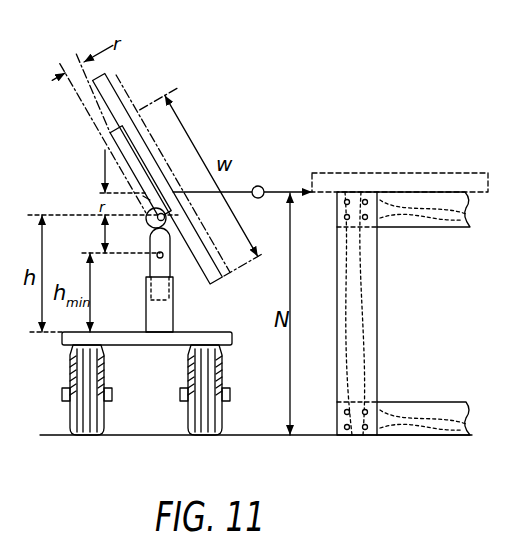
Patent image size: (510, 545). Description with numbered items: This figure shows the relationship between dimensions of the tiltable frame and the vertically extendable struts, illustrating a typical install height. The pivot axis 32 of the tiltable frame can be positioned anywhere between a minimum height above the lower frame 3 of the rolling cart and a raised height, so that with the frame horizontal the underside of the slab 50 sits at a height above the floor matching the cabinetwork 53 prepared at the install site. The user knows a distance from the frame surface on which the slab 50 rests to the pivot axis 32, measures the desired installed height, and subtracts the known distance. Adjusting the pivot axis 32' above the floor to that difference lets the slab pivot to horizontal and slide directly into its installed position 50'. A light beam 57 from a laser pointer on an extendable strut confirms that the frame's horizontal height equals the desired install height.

The lower frame 3 is at (153, 348).
The pivot axis 32 is at (139, 280).
The pivot axis 32' is at (183, 223).
The slab 50 is at (158, 156).
The installed position 50' is at (400, 150).
The cabinetwork 53 is at (398, 230).
The light beam 57 is at (262, 187).